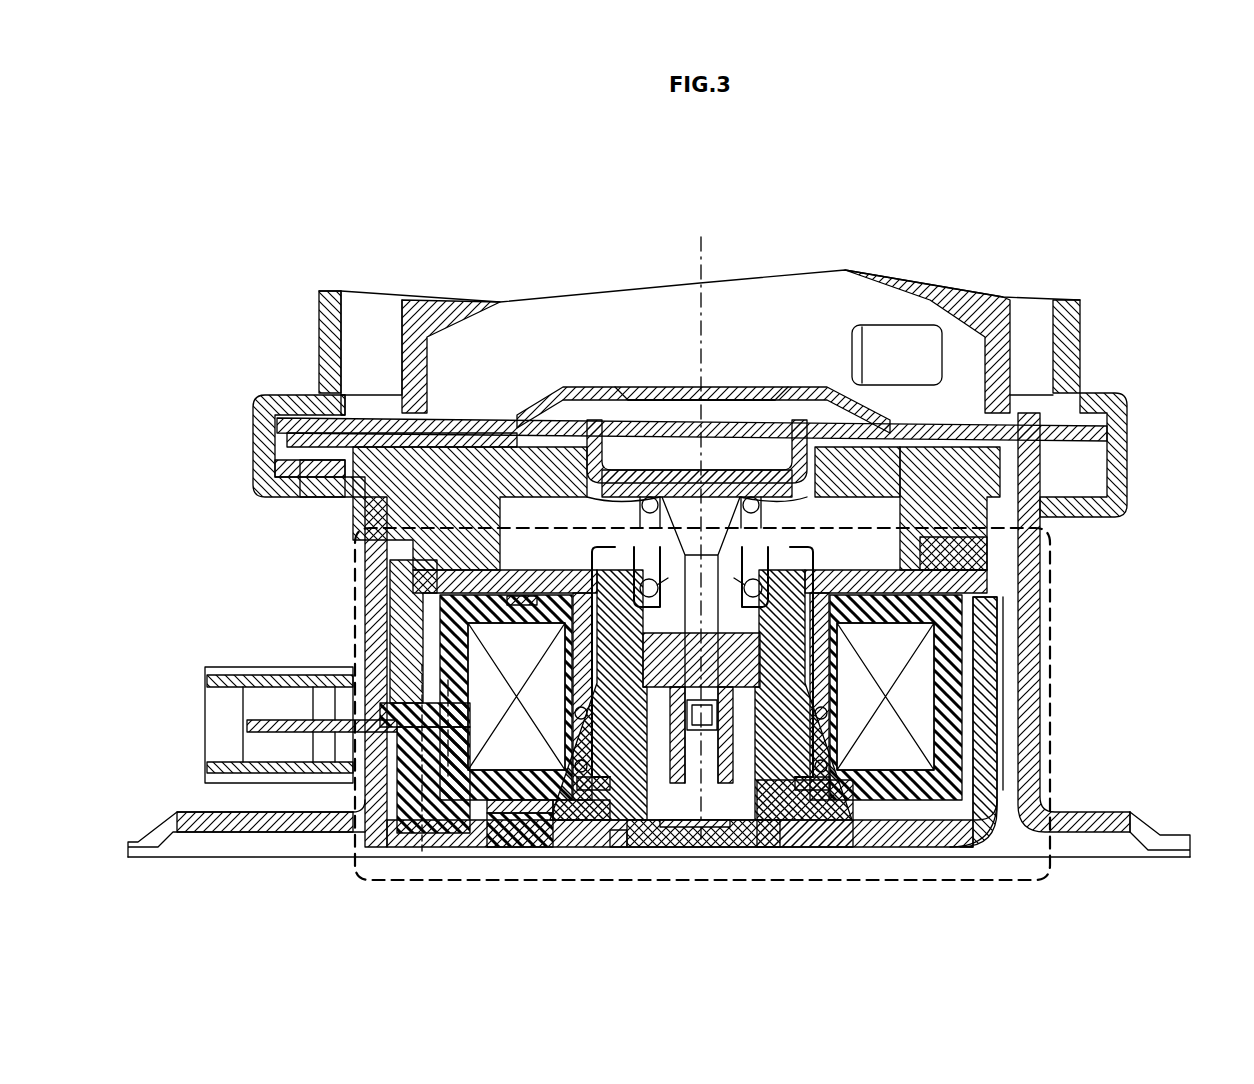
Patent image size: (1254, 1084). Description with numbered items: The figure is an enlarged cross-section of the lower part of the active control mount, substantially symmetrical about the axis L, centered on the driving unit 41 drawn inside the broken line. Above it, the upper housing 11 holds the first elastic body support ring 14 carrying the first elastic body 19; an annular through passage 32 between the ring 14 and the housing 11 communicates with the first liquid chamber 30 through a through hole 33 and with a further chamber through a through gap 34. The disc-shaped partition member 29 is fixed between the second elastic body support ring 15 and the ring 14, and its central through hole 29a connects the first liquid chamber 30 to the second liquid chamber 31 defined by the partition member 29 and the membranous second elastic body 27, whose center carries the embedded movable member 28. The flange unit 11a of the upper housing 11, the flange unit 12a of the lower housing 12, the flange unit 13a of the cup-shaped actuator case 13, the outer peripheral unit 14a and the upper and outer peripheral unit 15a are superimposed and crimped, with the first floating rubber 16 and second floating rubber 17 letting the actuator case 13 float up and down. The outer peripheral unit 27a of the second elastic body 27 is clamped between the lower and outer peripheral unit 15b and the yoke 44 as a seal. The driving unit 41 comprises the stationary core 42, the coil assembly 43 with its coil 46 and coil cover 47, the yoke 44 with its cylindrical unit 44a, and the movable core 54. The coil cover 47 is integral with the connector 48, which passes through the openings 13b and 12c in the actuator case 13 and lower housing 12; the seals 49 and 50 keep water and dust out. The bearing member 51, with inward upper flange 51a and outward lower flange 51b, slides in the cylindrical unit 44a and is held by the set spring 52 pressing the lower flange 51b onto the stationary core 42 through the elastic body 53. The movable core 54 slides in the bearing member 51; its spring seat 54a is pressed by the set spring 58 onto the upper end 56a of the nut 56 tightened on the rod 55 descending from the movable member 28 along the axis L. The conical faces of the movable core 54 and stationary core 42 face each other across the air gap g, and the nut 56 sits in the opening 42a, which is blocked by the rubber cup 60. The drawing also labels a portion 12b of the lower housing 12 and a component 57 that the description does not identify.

The upper housing 11 is at (300, 334).
The flange unit 11a is at (253, 440).
The lower housing 12 is at (1042, 615).
The flange unit 12a is at (1113, 488).
The case base flange 12b is at (1133, 817).
The opening 12c is at (383, 590).
The actuator case 13 is at (1005, 712).
The flange unit 13a is at (1097, 452).
The opening 13b is at (415, 640).
The first elastic body support ring 14 is at (406, 355).
The outer peripheral unit 14a is at (291, 418).
The second elastic body support ring 15 is at (455, 432).
The upper and outer peripheral unit 15a is at (278, 466).
The lower and outer peripheral unit 15b is at (980, 543).
The first floating rubber 16 is at (300, 477).
The second floating rubber 17 is at (380, 531).
The first elastic body 19 is at (448, 310).
The second elastic body 27 is at (850, 425).
The outer peripheral unit 27a is at (975, 560).
The movable member 28 is at (618, 468).
The partition member 29 is at (643, 383).
The through hole 29a is at (717, 393).
The first liquid chamber 30 is at (810, 310).
The second liquid chamber 31 is at (560, 412).
The through passage 32 is at (370, 308).
The through hole 33 is at (895, 333).
The through gap 34 is at (1047, 344).
The driving unit 41 is at (977, 887).
The stationary core 42 is at (847, 852).
The opening 42a is at (648, 833).
The coil assembly 43 is at (975, 667).
The yoke 44 is at (955, 586).
The cylindrical unit 44a is at (827, 648).
The coil 46 is at (506, 756).
The coil cover 47 is at (440, 790).
The connector 48 is at (249, 672).
The seal 49 is at (522, 596).
The seal 50 is at (510, 805).
The bearing member 51 is at (812, 584).
The upper flange 51a is at (612, 546).
The lower flange 51b is at (605, 792).
The set spring 52 is at (807, 795).
The elastic body 53 is at (818, 792).
The movable core 54 is at (567, 633).
The spring seat 54a is at (762, 622).
The rod 55 is at (712, 550).
The nut 56 is at (663, 760).
The upper end 56a is at (814, 686).
The clip spring 57 is at (596, 549).
The set spring 58 is at (760, 510).
The rubber cup 60 is at (713, 837).
The conical air gap g is at (766, 735).
The axis L is at (708, 256).